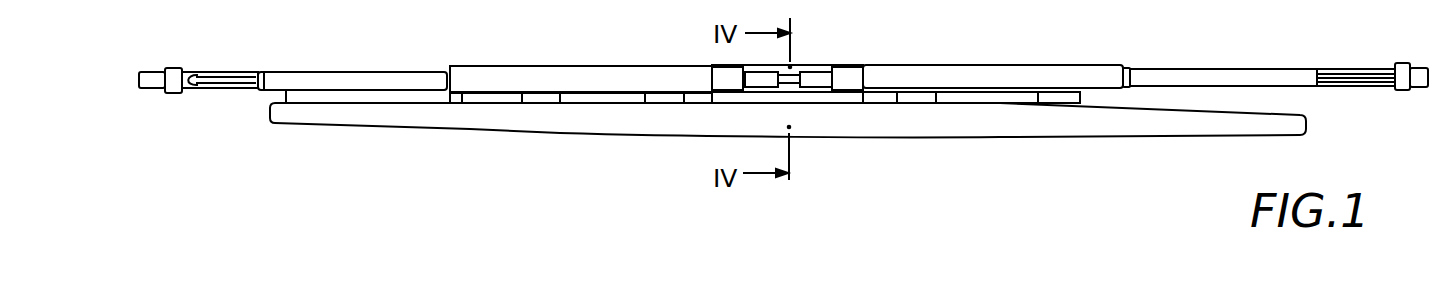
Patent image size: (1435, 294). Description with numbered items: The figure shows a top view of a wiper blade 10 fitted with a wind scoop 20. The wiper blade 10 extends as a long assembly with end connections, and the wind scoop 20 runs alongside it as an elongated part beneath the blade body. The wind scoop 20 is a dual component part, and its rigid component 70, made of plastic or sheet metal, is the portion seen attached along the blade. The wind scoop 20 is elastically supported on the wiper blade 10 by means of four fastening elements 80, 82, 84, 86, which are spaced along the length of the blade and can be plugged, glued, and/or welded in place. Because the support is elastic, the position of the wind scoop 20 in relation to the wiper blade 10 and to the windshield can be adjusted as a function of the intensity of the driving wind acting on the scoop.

The wiper blade 10 is at (476, 52).
The wind scoop 20 is at (300, 156).
The rigid component 70 is at (457, 107).
The fastening element 80 is at (543, 97).
The fastening element 82 is at (660, 100).
The fastening element 84 is at (913, 102).
The fastening element 86 is at (1063, 104).